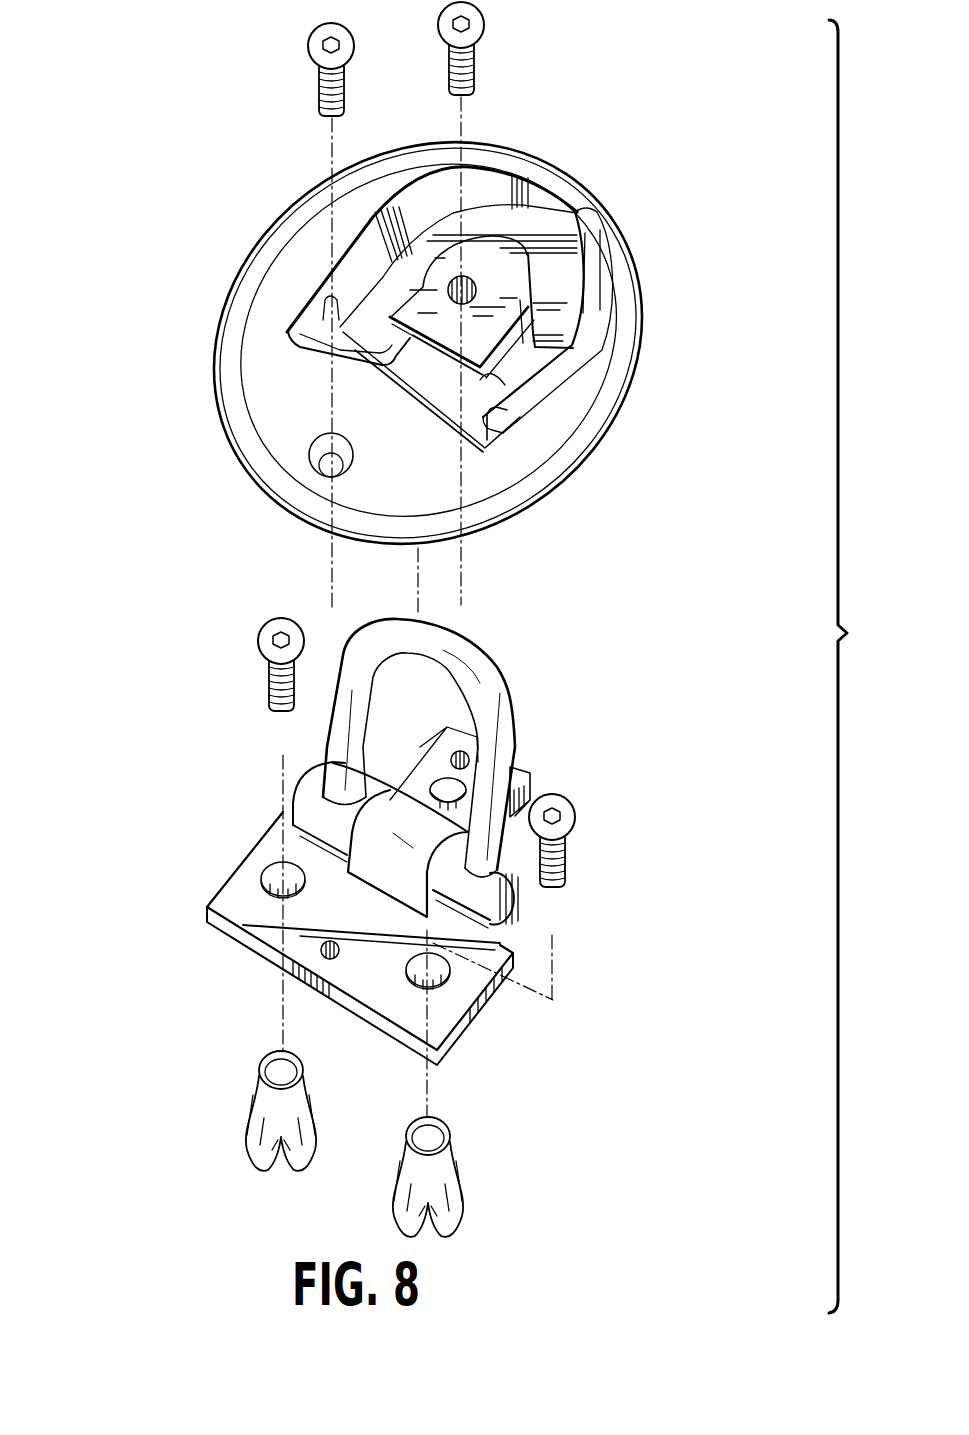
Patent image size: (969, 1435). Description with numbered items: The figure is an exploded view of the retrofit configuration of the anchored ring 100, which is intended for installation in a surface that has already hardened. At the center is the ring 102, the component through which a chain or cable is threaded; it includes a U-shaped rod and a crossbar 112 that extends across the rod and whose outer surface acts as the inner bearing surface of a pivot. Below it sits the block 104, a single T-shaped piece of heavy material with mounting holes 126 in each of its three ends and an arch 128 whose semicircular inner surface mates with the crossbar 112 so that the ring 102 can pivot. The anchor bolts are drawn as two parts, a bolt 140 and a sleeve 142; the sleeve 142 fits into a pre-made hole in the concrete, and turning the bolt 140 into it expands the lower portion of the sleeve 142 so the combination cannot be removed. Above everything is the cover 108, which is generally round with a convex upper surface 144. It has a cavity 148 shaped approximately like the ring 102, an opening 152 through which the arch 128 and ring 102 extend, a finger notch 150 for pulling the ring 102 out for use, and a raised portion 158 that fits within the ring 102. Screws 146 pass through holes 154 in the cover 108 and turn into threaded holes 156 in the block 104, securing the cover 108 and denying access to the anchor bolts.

The anchored ring 100 is at (733, 240).
The ring 102 is at (487, 657).
The block 104 is at (331, 875).
The cover 108 is at (437, 343).
The crossbar 112 is at (513, 910).
The mounting holes 126 is at (300, 889).
The arch 128 is at (418, 798).
The bolt 140 is at (268, 707).
The sleeve 142 is at (300, 1107).
The upper surface 144 is at (418, 495).
The screws 146 is at (317, 90).
The cavity 148 is at (523, 387).
The finger notch 150 is at (562, 210).
The opening 152 is at (466, 415).
The holes 154 is at (460, 298).
The threaded holes 156 is at (320, 951).
The raised portion 158 is at (520, 257).